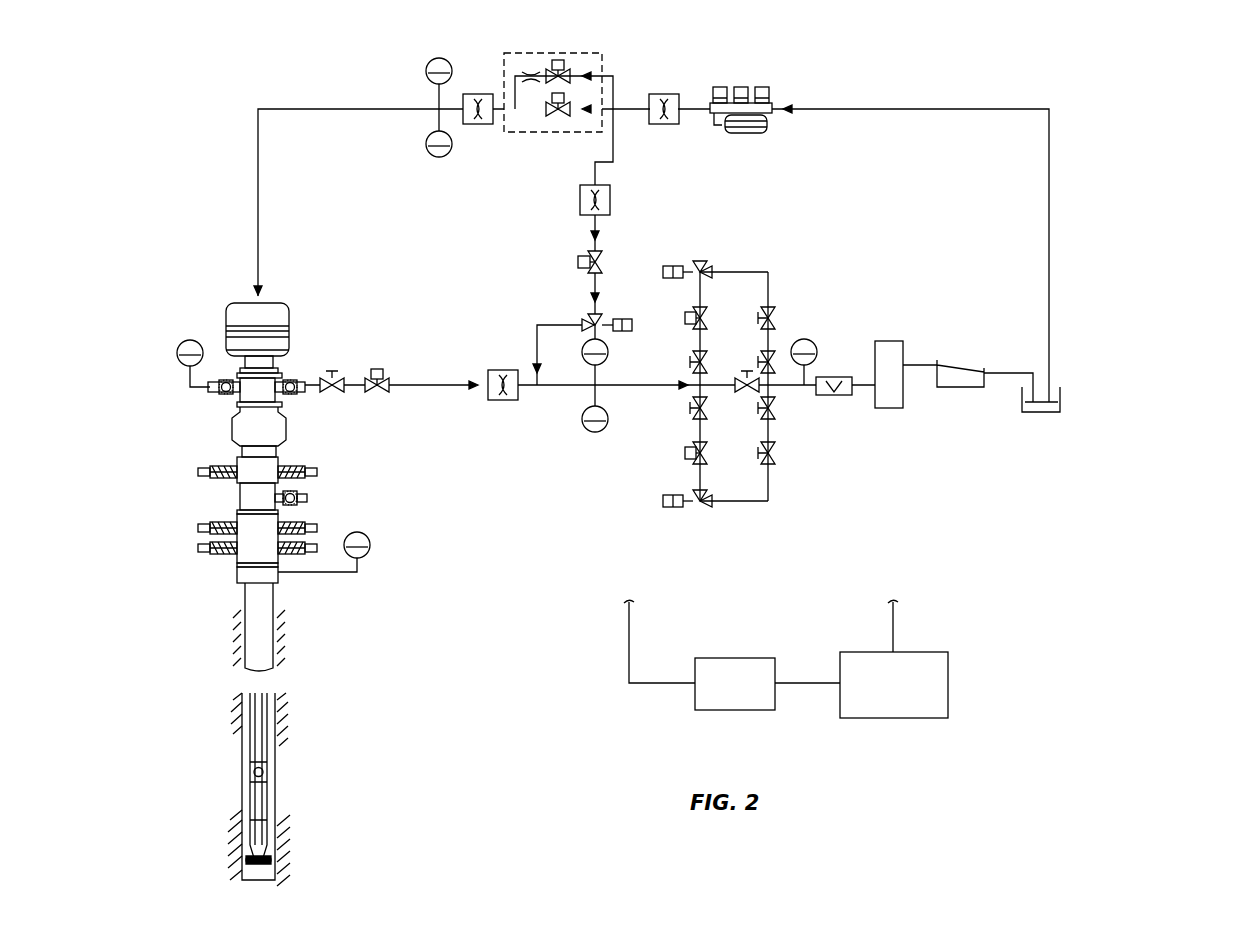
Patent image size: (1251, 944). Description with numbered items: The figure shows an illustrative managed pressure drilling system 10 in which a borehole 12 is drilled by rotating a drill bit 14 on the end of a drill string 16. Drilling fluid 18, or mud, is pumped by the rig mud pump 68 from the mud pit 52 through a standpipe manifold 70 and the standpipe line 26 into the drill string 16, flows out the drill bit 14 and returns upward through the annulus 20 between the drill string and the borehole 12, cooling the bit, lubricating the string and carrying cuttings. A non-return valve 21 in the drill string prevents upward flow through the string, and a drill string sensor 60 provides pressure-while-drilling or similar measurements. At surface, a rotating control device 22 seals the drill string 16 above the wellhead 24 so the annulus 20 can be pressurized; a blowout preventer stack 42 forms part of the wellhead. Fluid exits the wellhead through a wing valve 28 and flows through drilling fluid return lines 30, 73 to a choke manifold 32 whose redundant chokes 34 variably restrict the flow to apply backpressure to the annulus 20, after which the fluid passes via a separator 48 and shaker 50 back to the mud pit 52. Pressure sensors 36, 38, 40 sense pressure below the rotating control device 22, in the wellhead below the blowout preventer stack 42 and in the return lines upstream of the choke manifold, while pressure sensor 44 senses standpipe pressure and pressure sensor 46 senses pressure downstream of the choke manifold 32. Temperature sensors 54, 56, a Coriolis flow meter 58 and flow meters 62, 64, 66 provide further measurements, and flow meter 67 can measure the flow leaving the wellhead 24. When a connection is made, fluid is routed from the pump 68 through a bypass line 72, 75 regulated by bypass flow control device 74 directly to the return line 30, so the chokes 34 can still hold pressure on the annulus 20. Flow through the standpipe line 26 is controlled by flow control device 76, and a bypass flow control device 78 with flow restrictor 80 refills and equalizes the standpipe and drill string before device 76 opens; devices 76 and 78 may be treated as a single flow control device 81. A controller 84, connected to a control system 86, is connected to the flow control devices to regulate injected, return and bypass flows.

The managed pressure drilling system 10 is at (1166, 140).
The borehole 12 is at (276, 760).
The drill bit 14 is at (247, 855).
The drill string 16 is at (272, 708).
The drilling fluid 18 is at (847, 112).
The annulus 20 is at (268, 795).
The non-return valve 21 is at (253, 772).
The rotating control device 22 is at (290, 325).
The wellhead 24 is at (228, 578).
The standpipe line 26 is at (309, 105).
The wing valve 28 is at (298, 378).
The drilling fluid return line 30 is at (627, 392).
The choke manifold 32 is at (795, 296).
The redundant chokes 34 is at (710, 268).
The pressure sensor 36 is at (178, 345).
The pressure sensor 38 is at (368, 535).
The pressure sensor 40 is at (610, 350).
The blowout preventer stack 42 is at (285, 460).
The pressure sensor 44 is at (428, 64).
The pressure sensor 46 is at (810, 337).
The separator 48 is at (892, 340).
The shaker 50 is at (950, 388).
The mud pit 52 is at (1045, 415).
The temperature sensor 54 is at (430, 153).
The temperature sensor 56 is at (590, 433).
The Coriolis flow meter 58 is at (835, 398).
The drill string sensor 60 is at (270, 812).
The flow meter 62 is at (668, 124).
The flow meter 64 is at (612, 197).
The flow meter 66 is at (490, 124).
The flow meter 67 is at (493, 402).
The rig mud pump 68 is at (772, 92).
The standpipe manifold 70 is at (626, 77).
The bypass line 72 is at (588, 226).
The drilling fluid return line 73 is at (422, 383).
The bypass flow control device 74 is at (606, 312).
The bypass line 75 is at (533, 340).
The flow control device 76 is at (556, 120).
The bypass flow control device 78 is at (554, 62).
The flow restrictor 80 is at (527, 68).
The single flow control device 81 is at (603, 54).
The controller 84 is at (699, 655).
The control system 86 is at (861, 659).